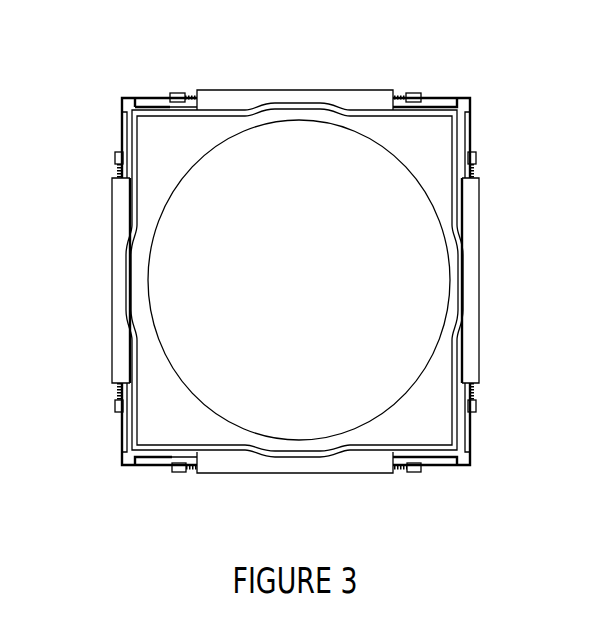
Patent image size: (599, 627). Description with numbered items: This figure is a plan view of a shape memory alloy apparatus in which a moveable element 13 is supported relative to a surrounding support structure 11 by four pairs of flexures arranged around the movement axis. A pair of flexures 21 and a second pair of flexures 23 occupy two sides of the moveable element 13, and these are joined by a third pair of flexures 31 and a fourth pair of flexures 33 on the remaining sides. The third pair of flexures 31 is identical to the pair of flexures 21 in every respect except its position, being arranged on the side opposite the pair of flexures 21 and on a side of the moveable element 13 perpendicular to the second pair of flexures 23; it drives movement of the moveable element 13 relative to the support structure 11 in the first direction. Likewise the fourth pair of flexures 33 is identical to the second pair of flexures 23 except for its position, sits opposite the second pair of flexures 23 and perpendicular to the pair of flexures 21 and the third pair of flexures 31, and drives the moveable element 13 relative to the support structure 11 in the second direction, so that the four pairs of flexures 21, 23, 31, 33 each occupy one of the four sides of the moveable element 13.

The support structure 11 is at (380, 90).
The moveable element 13 is at (427, 134).
The pair of flexures 21 is at (291, 476).
The second pair of flexures 23 is at (479, 288).
The third pair of flexures 31 is at (295, 90).
The fourth pair of flexures 33 is at (112, 288).